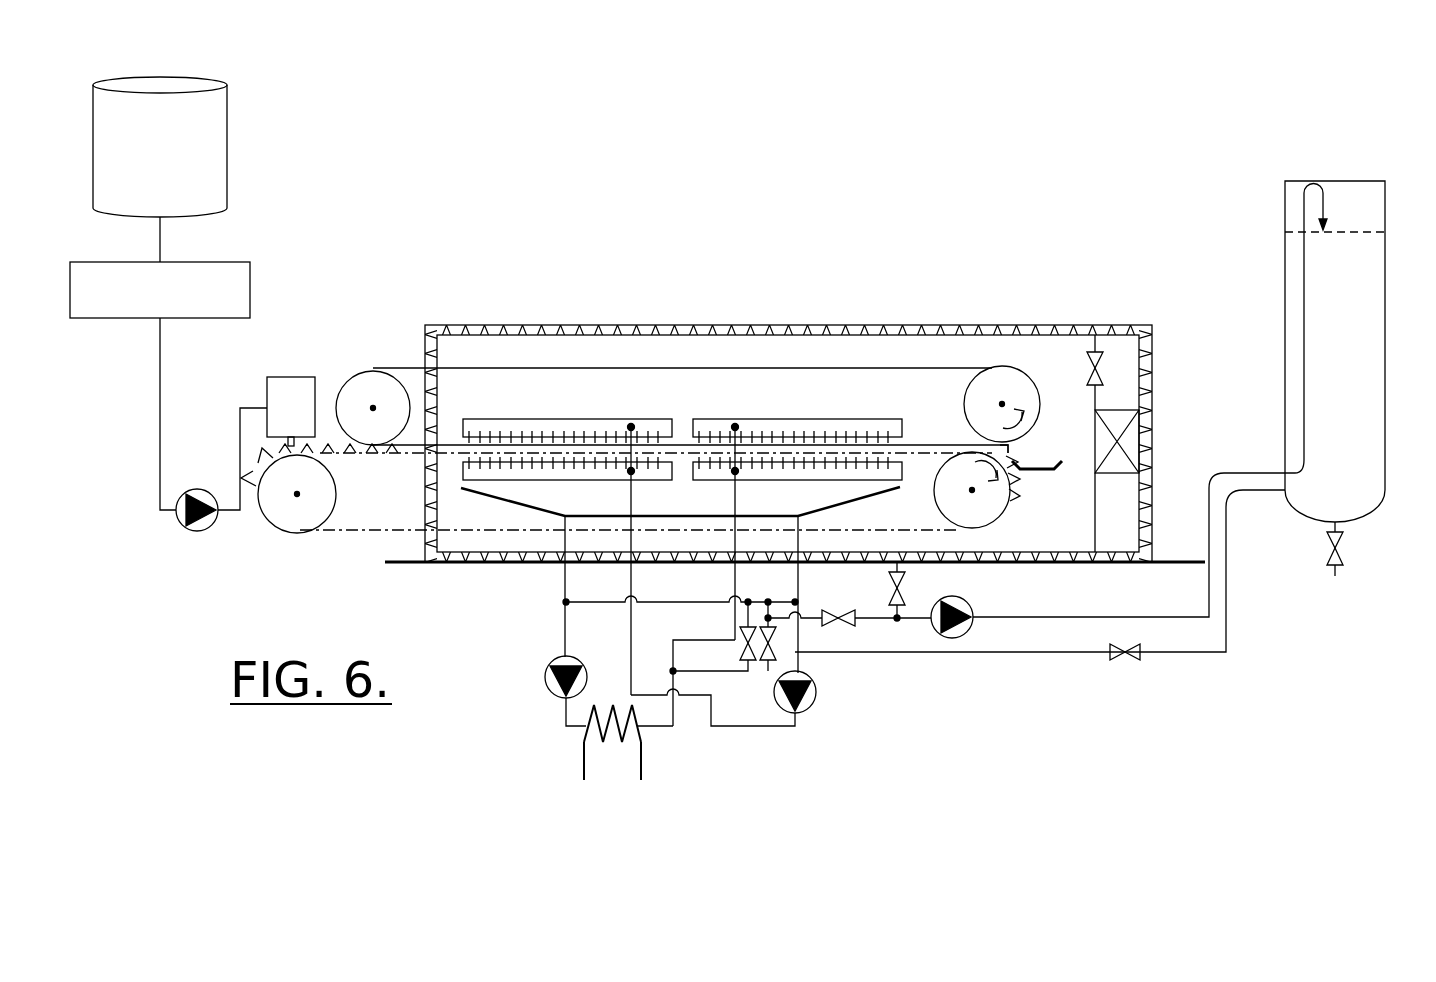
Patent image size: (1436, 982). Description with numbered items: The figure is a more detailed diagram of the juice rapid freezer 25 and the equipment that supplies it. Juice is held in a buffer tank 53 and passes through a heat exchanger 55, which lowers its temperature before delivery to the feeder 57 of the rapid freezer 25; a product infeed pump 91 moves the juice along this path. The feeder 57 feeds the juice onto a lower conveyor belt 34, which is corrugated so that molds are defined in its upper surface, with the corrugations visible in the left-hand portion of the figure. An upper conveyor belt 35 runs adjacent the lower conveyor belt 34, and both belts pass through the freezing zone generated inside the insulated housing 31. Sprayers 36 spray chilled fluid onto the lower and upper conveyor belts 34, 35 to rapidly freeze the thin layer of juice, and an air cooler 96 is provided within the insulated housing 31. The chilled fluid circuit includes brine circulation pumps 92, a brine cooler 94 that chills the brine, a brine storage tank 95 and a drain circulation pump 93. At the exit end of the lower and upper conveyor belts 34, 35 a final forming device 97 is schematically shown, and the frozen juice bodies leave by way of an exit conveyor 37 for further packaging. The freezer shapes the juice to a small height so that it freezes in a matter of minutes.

The juice rapid freezer 25 is at (982, 188).
The insulated housing 31 is at (603, 323).
The lower conveyor belt 34 is at (937, 528).
The upper conveyor belt 35 is at (937, 365).
The sprayers 36 is at (772, 427).
The exit conveyor 37 is at (1030, 471).
The buffer tank 53 is at (228, 146).
The heat exchanger 55 is at (250, 278).
The feeder 57 is at (298, 376).
The product infeed pump 91 is at (222, 455).
The brine circulation pumps 92 is at (548, 688).
The drain circulation pump 93 is at (958, 640).
The brine cooler 94 is at (641, 752).
The brine storage tank 95 is at (1385, 321).
The air cooler 96 is at (1128, 440).
The final forming device 97 is at (1027, 440).